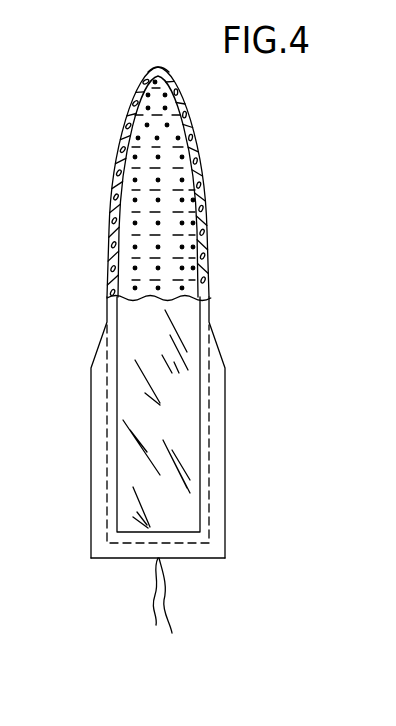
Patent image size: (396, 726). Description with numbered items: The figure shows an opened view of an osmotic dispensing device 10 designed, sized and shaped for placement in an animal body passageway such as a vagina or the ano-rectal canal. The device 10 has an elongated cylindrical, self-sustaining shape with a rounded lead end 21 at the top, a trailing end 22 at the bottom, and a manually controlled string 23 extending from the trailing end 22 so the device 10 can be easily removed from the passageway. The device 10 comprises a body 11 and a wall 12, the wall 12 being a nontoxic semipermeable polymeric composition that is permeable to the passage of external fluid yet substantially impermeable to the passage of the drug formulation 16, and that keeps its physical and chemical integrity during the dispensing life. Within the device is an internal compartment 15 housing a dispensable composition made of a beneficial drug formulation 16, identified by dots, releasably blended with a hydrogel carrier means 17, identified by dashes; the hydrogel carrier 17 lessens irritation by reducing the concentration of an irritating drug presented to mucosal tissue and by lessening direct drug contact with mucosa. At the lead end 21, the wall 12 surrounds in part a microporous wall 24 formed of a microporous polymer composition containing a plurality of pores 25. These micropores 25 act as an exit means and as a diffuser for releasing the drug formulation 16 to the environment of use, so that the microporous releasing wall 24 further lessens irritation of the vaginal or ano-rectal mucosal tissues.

The dispensing device 10 is at (120, 50).
The rounded lead end 21 is at (155, 67).
The microporous wall 24 is at (208, 248).
The pores 25 is at (208, 173).
The body member 11 is at (211, 297).
The internal compartment 15 is at (143, 125).
The beneficial drug formulation 16 is at (137, 158).
The hydrogel carrier means 17 is at (133, 192).
The wall 12 is at (220, 465).
The trailing end 22 is at (107, 559).
The manually controlled string 23 is at (168, 612).